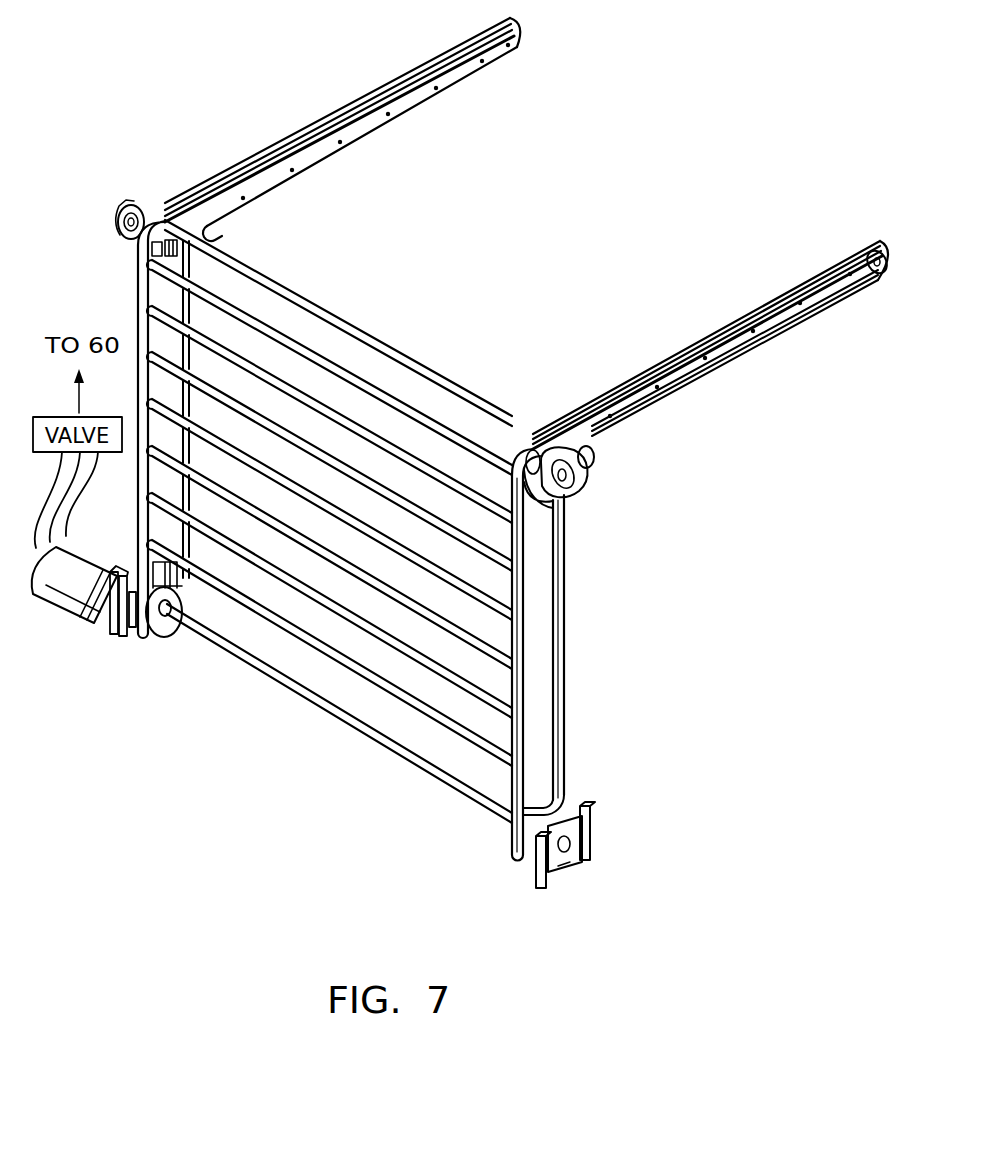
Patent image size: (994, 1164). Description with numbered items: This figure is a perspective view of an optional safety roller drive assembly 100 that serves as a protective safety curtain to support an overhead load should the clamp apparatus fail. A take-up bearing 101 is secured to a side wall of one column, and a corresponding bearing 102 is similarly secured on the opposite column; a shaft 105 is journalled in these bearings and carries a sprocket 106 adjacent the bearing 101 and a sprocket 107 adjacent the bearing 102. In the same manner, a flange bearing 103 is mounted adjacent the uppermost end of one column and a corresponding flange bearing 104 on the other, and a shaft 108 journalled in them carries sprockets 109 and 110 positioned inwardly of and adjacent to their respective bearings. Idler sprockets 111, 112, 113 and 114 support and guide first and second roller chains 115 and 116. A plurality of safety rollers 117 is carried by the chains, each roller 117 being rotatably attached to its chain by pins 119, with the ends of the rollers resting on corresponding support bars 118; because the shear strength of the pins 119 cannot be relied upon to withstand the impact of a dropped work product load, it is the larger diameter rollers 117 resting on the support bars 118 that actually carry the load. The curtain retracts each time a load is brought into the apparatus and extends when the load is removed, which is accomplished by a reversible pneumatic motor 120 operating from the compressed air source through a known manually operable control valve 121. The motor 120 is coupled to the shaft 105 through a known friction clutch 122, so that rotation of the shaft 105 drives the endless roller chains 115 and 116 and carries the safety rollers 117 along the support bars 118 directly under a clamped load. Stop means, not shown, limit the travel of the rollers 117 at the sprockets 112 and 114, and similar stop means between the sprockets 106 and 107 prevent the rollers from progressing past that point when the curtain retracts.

The safety roller drive assembly 100 is at (740, 86).
The take-up bearing 101 is at (572, 870).
The bearing 102 is at (138, 638).
The flange bearing 103 is at (578, 488).
The flange bearing 104 is at (128, 198).
The shaft 105 is at (303, 705).
The sprocket 106 is at (535, 800).
The sprocket 107 is at (168, 628).
The shaft 108 is at (398, 360).
The sprocket 109 is at (548, 495).
The sprocket 110 is at (152, 262).
The idler sprocket 111 is at (594, 456).
The idler sprocket 112 is at (875, 270).
The idler sprocket 113 is at (215, 233).
The idler sprocket 114 is at (520, 24).
The first roller chain 115 is at (363, 95).
The second roller chain 116 is at (752, 310).
The safety rollers 117 is at (318, 300).
The support bars 118 is at (410, 100).
The pins 119 is at (550, 580).
The reversible pneumatic motor 120 is at (80, 585).
The control valve 121 is at (128, 455).
The friction clutch 122 is at (117, 620).